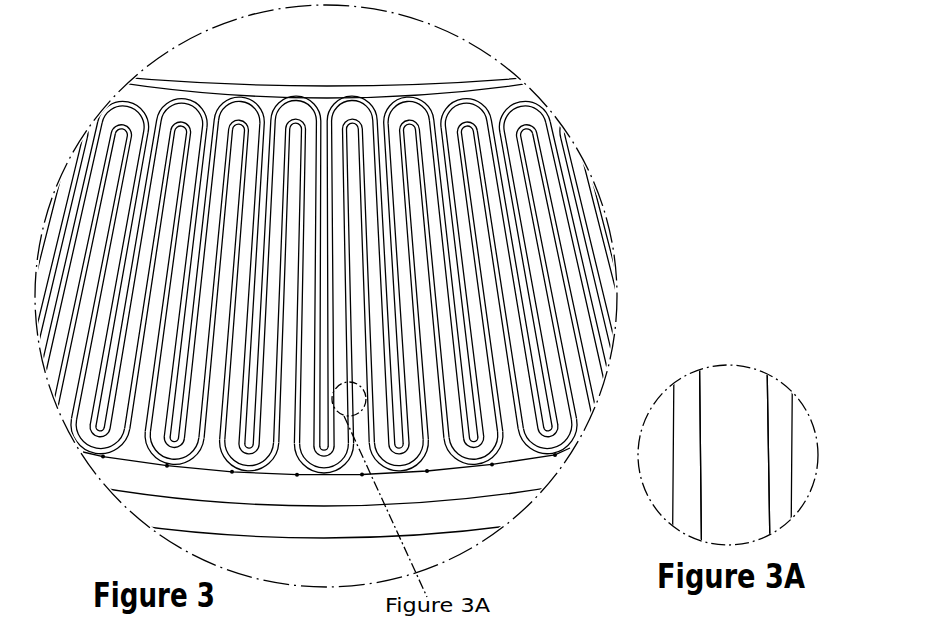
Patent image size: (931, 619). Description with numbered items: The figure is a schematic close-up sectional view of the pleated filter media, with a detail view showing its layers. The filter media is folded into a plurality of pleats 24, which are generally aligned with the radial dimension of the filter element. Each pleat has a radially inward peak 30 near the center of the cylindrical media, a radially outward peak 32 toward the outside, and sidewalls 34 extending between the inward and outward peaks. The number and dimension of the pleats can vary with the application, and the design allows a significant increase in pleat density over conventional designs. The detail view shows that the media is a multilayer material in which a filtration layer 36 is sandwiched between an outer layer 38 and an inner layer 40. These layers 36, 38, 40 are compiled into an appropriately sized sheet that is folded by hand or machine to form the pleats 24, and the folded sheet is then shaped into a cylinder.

In FIG. 3, the pleats 24 is at (170, 118).
In FIG. 3, the radially inward peaks 30 is at (290, 97).
In FIG. 3, the radially outward peaks 32 is at (327, 477).
In FIG. 3, the sidewalls 34 is at (170, 220).
In FIG. 3A, the filtration layer 36 is at (733, 397).
In FIG. 3A, the outer layer 38 is at (778, 403).
In FIG. 3A, the inner layer 40 is at (687, 395).